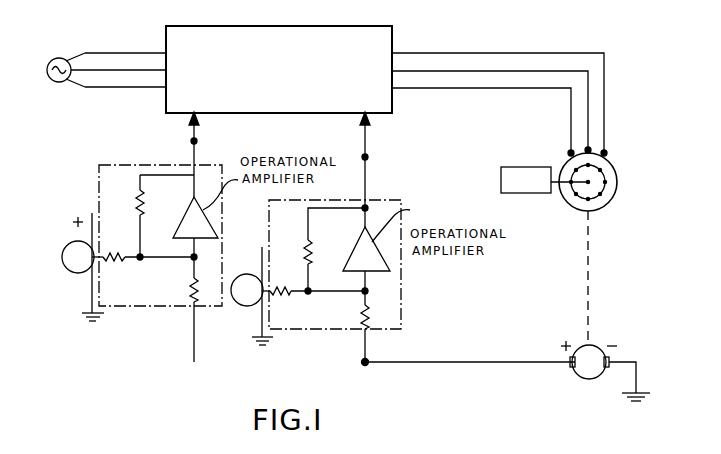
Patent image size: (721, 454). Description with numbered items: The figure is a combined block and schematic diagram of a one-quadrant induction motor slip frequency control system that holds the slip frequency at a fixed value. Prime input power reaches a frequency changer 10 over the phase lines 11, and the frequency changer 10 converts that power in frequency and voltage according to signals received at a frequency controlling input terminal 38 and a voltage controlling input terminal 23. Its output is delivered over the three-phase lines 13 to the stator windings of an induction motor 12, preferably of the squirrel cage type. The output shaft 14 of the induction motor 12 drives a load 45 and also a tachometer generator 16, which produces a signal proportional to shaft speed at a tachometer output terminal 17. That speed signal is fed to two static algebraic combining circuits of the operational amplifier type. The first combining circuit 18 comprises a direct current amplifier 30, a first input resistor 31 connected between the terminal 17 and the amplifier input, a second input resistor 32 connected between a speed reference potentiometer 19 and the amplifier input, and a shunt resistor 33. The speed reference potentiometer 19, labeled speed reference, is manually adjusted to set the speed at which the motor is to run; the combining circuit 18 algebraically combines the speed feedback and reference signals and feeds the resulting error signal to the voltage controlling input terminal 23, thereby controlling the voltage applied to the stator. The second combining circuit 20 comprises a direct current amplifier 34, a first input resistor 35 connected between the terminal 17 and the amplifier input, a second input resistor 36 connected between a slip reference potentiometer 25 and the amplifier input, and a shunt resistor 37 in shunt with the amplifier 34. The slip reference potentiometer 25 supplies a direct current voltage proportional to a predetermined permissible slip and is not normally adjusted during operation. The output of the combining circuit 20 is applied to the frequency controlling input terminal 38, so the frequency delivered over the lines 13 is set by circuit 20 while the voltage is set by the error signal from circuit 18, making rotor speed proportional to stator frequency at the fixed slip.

The frequency changer 10 is at (360, 97).
The phase lines 11 is at (135, 54).
The induction motor 12 is at (617, 186).
The three-phase lines 13 is at (572, 144).
The output shaft 14 is at (589, 254).
The tachometer generator 16 is at (591, 380).
The tachometer output terminal 17 is at (571, 371).
The static algebraic combining circuit 18 is at (403, 304).
The speed reference potentiometer 19 is at (247, 274).
The second static algebraic combining circuit 20 is at (206, 165).
The voltage controlling input terminal 23 is at (365, 157).
The slip reference potentiometer 25 is at (78, 242).
The direct current amplifier 30 is at (382, 261).
The first input resistor 31 is at (372, 323).
The second input resistor 32 is at (288, 295).
The shunt resistor 33 is at (311, 254).
The direct current amplifier 34 is at (183, 216).
The first input resistor 35 is at (190, 294).
The second input resistor 36 is at (128, 262).
The shunt resistor 37 is at (138, 204).
The frequency controlling input terminal 38 is at (194, 141).
The load 45 is at (527, 167).